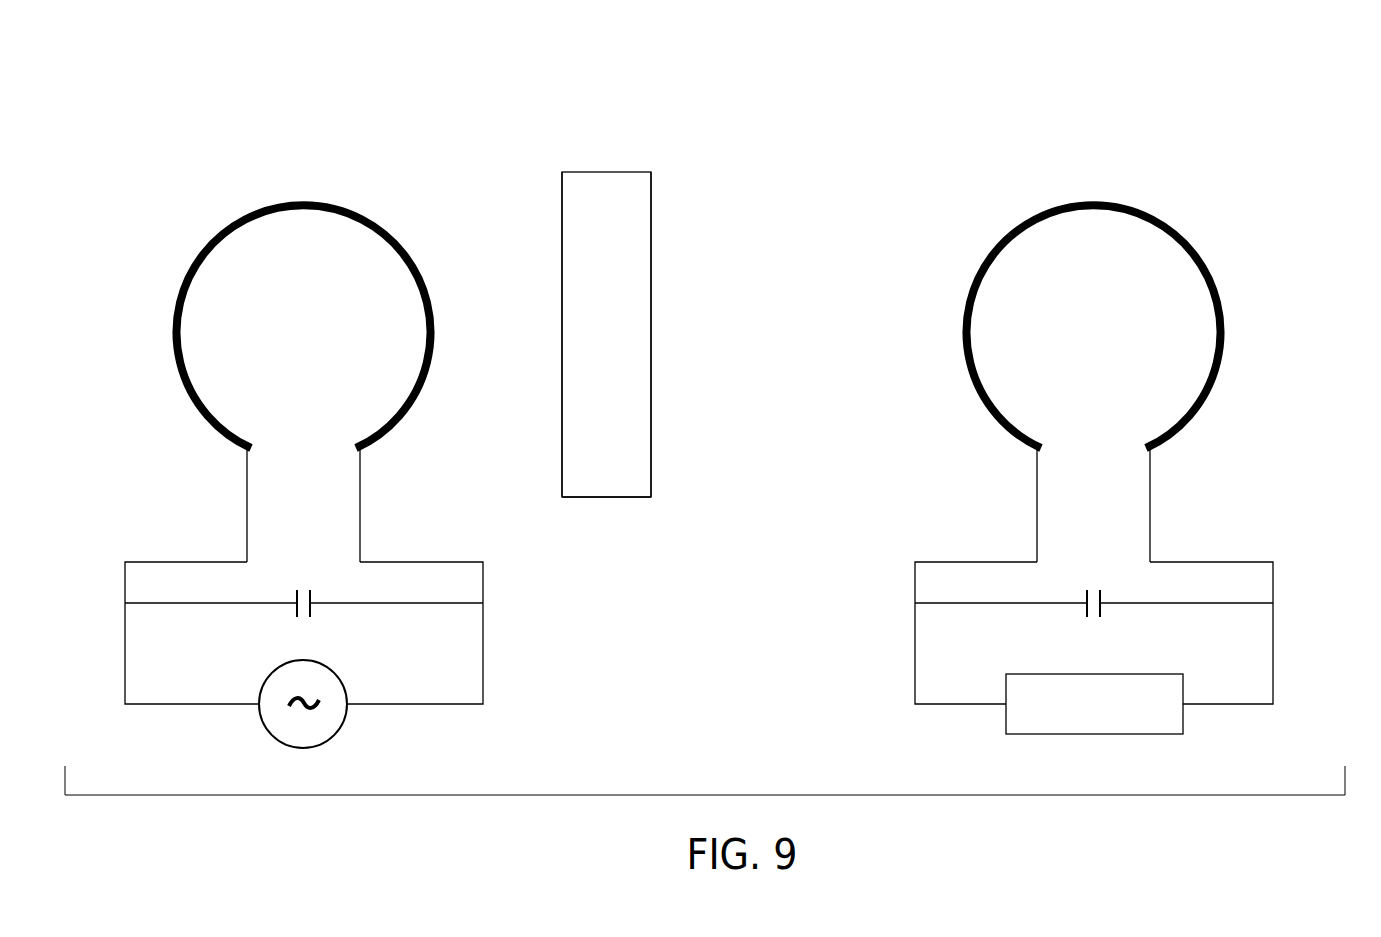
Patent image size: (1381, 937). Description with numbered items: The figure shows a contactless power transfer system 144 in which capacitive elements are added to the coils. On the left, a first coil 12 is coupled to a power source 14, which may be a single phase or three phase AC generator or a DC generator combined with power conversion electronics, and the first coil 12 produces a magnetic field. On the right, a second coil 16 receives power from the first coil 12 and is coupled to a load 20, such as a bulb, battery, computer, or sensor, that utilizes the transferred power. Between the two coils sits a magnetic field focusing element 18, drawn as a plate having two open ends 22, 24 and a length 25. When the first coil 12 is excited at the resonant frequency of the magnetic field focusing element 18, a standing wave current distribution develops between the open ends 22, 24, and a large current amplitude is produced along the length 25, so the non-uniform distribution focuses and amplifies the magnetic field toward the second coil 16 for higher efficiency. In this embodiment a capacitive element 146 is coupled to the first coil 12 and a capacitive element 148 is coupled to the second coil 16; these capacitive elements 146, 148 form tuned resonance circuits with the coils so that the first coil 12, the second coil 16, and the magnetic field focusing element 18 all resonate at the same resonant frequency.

The contactless power transfer system 144 is at (196, 58).
The first coil 12 is at (390, 233).
The power source 14 is at (265, 686).
The second coil 16 is at (1208, 258).
The magnetic field focusing element 18 is at (607, 172).
The load 20 is at (1006, 686).
The open end 22 is at (562, 402).
The open end 24 is at (651, 362).
The length 25 is at (627, 497).
The capacitive element 146 is at (454, 604).
The capacitive element 148 is at (1243, 604).